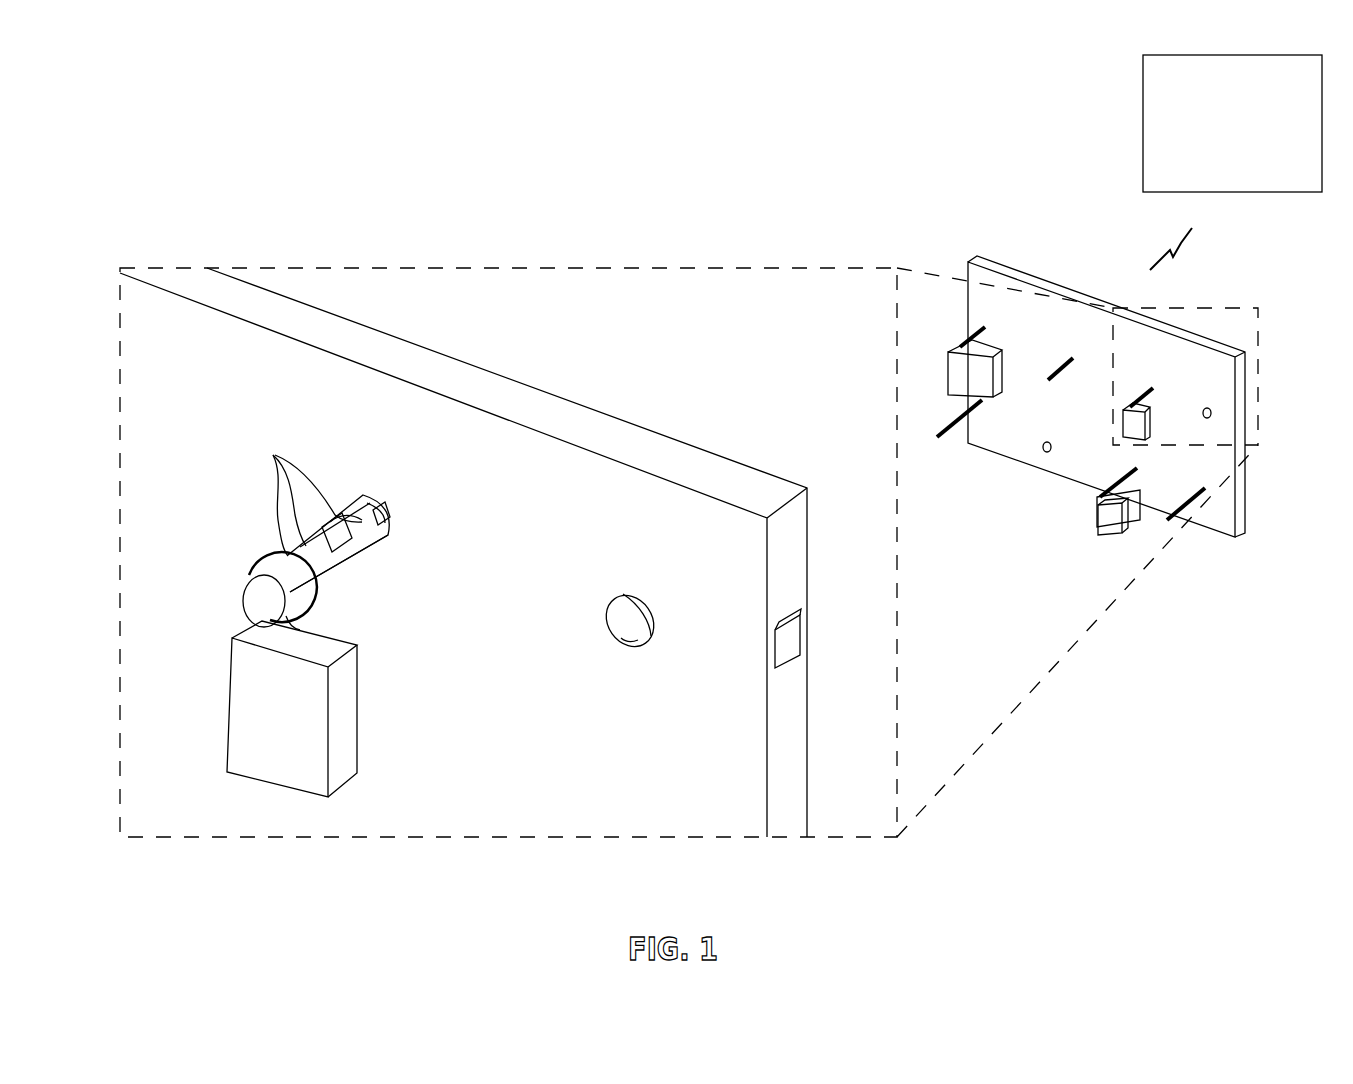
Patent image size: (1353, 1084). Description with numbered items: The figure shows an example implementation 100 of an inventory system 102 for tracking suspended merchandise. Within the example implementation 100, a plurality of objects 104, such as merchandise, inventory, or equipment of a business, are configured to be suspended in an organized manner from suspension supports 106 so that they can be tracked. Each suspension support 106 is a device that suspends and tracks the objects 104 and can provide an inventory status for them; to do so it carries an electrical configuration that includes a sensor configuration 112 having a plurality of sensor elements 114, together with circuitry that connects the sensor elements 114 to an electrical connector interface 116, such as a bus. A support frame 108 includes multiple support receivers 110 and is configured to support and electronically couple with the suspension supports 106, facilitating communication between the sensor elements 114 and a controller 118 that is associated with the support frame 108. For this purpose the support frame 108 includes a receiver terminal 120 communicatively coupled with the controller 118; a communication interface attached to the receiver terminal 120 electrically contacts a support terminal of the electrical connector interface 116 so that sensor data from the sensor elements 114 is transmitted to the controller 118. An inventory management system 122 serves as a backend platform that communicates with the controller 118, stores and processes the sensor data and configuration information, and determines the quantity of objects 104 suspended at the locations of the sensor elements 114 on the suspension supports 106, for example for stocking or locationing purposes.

The example implementation 100 is at (186, 66).
The inventory system 102 is at (878, 108).
The objects 104 is at (333, 746).
The suspension support 106 is at (258, 603).
The support frame 108 is at (597, 430).
The support receiver 110 is at (627, 580).
The sensor configuration 112 is at (421, 501).
The sensor elements 114 is at (301, 493).
The electrical connector interface 116 is at (395, 537).
The controller 118 is at (786, 653).
The receiver terminal 120 is at (653, 647).
The inventory management system 122 is at (1218, 175).